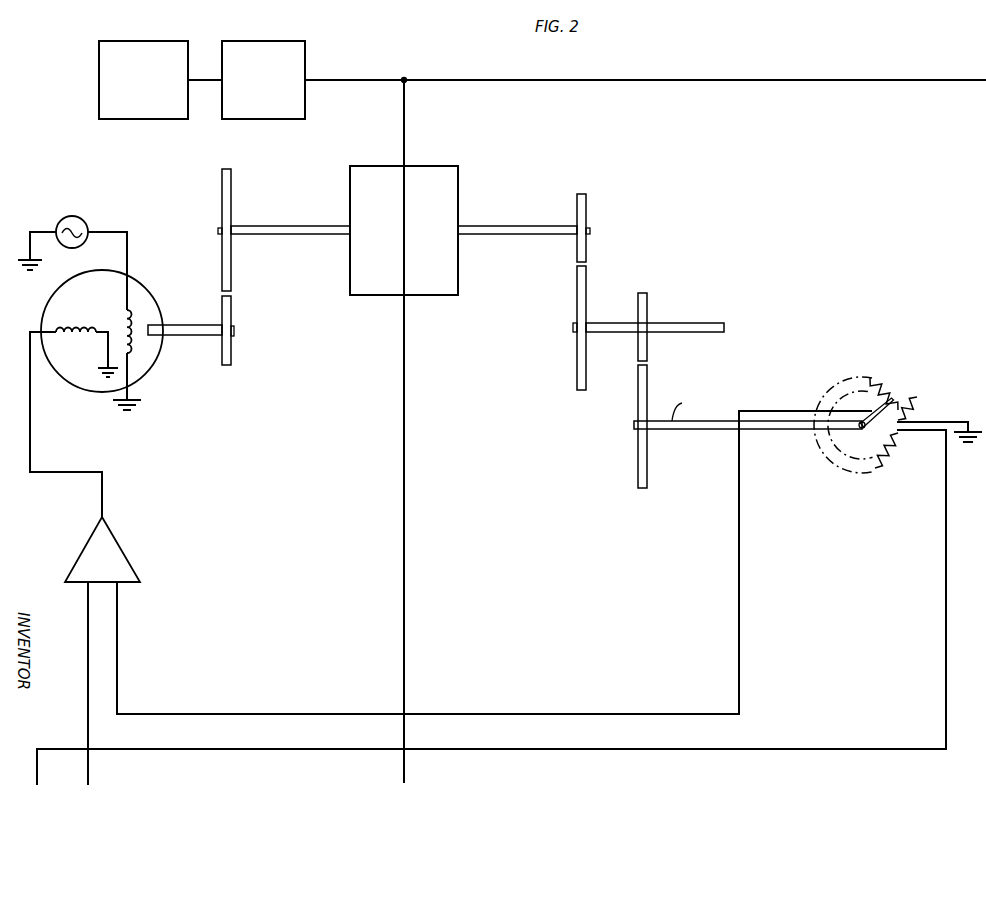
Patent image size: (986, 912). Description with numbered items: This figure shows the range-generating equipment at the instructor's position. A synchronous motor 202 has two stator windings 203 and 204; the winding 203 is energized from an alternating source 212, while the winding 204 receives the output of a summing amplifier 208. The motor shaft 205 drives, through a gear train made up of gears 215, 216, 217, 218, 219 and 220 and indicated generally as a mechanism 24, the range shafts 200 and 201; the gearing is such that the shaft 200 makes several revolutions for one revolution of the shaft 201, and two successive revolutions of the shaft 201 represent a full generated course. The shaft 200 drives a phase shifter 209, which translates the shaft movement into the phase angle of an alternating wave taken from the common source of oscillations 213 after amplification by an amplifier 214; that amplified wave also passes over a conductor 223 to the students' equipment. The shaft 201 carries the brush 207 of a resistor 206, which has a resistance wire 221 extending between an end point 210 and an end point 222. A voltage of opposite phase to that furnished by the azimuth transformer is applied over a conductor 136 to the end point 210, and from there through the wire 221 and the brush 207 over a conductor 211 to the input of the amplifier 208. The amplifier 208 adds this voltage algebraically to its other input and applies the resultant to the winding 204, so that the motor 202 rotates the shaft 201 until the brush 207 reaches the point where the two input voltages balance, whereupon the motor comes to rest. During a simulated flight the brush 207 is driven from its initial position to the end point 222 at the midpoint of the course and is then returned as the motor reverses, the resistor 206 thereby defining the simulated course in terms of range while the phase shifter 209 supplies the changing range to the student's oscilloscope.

The drive mechanism 24 is at (290, 203).
The conductor 136 is at (642, 749).
The range shaft 200 is at (525, 208).
The range shaft 201 is at (712, 431).
The synchronous motor 202 is at (150, 301).
The stator winding 203 is at (119, 317).
The stator winding 204 is at (62, 340).
The shaft of the motor 205 is at (210, 336).
The resistor 206 is at (851, 407).
The brush 207 is at (872, 426).
The summing amplifier 208 is at (125, 565).
The phase shifter 209 is at (458, 190).
The end point 210 is at (905, 448).
The conductor 211 is at (636, 714).
The source 212 is at (82, 222).
The common source of oscillations 213 is at (99, 80).
The amplifier 214 is at (305, 93).
The gear 215 is at (231, 306).
The gear 216 is at (231, 251).
The gear 217 is at (586, 203).
The gear 218 is at (586, 290).
The gear 219 is at (647, 306).
The gear 220 is at (647, 392).
The resistance wire 221 is at (885, 392).
The end point 222 is at (904, 412).
The conductor 223 is at (920, 79).